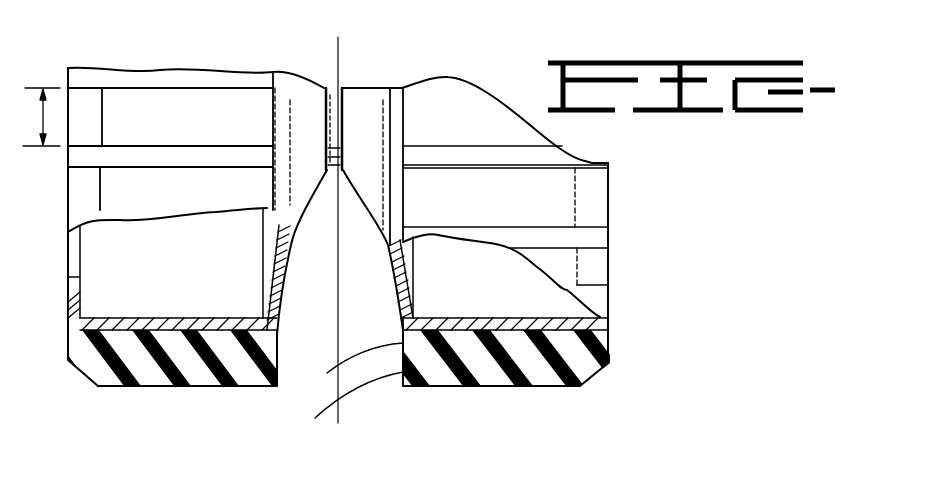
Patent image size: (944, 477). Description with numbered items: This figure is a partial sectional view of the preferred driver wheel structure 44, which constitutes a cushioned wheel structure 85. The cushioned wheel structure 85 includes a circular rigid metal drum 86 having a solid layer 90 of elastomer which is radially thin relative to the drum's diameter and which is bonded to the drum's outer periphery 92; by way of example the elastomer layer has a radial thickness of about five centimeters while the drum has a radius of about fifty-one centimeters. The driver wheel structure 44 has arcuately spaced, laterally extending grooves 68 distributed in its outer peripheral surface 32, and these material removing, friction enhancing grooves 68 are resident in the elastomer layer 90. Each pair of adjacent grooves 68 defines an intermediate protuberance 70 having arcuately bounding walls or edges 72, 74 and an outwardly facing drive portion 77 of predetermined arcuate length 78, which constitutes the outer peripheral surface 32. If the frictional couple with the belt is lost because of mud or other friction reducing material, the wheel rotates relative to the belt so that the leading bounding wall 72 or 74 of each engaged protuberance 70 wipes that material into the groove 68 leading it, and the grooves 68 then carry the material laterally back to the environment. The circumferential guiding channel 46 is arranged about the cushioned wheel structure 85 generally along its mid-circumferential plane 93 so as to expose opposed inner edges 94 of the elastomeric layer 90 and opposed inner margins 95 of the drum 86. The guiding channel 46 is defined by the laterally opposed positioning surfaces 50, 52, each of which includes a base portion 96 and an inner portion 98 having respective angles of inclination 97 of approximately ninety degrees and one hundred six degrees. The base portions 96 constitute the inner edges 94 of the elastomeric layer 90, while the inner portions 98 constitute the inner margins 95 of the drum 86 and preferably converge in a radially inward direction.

The outer peripheral surface 32 is at (553, 388).
The driver wheel structure 44 is at (112, 388).
The circumferential guiding channel 46 is at (373, 394).
The positioning surface 50 is at (308, 289).
The positioning surface 52 is at (372, 289).
The grooves 68 is at (222, 80).
The protuberance 70 is at (270, 106).
The bounding wall 72 is at (108, 157).
The bounding wall 74 is at (118, 168).
The drive portion 77 is at (154, 121).
The arcuate length 78 is at (42, 113).
The cushioned wheel structure 85 is at (238, 422).
The drum 86 is at (364, 96).
The elastomer layer 90 is at (80, 348).
The outer periphery 92 is at (152, 363).
The mid-circumferential plane 93 is at (342, 61).
The inner edges 94 is at (277, 366).
The inner margins 95 is at (390, 277).
The base portion 96 is at (267, 350).
The angles of inclination 97 is at (242, 376).
The inner portion 98 is at (392, 257).